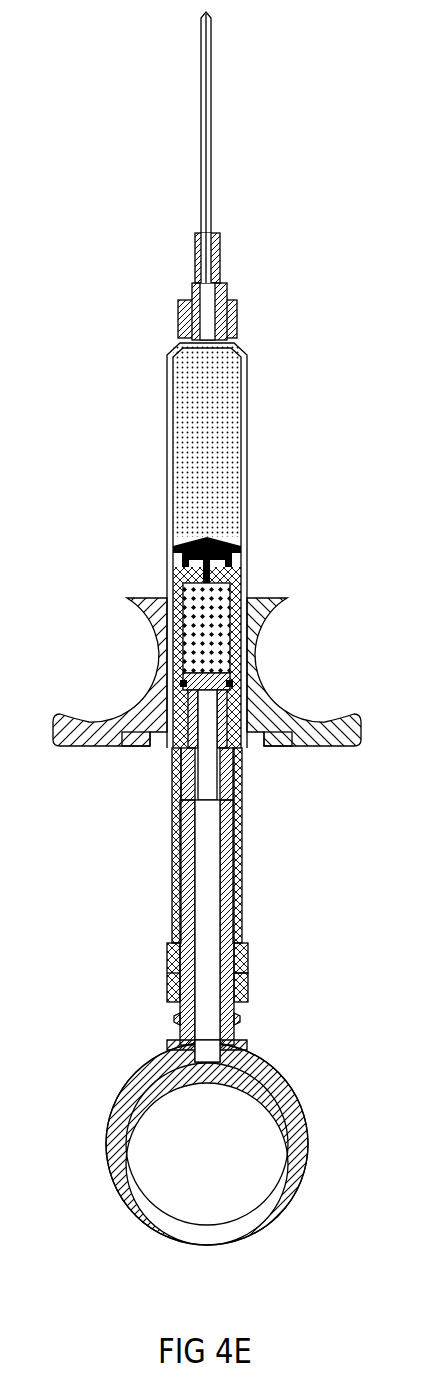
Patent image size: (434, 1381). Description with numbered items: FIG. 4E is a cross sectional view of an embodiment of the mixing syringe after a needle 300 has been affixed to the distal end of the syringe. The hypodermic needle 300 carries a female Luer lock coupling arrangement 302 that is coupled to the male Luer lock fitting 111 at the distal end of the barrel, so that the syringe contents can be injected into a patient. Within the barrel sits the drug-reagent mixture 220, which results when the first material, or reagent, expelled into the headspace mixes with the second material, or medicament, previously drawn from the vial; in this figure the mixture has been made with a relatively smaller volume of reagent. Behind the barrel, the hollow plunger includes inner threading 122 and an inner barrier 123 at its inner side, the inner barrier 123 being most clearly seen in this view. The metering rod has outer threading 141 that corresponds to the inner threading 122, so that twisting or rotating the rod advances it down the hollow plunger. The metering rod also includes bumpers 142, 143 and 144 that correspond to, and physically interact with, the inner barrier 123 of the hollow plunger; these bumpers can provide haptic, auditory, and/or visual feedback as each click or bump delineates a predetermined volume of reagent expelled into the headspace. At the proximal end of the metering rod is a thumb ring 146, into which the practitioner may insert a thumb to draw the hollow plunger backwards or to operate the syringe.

The needle 300 is at (212, 180).
The female Luer lock coupling arrangement 302 is at (222, 298).
The male Luer lock fitting 111 is at (185, 318).
The drug-reagent mixture 220 is at (182, 435).
The inner threading 122 is at (240, 763).
The outer threading 141 is at (235, 800).
The inner barrier 123 is at (208, 985).
The bumper 142 is at (240, 948).
The bumper 143 is at (242, 983).
The bumper 144 is at (240, 1018).
The thumb ring 146 is at (280, 1196).